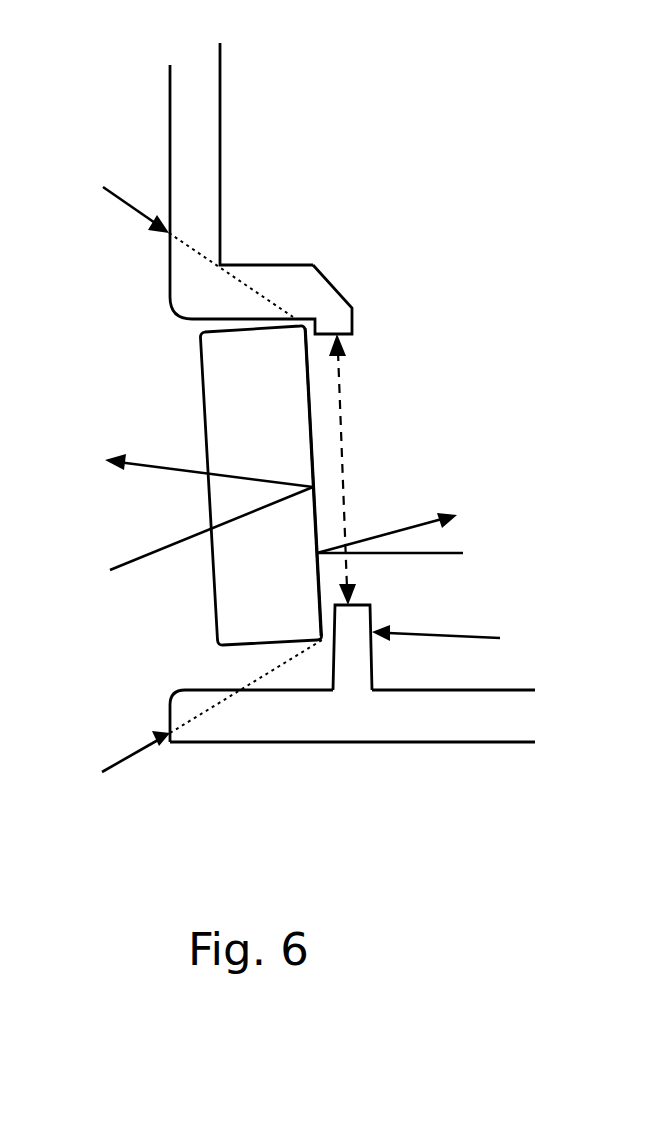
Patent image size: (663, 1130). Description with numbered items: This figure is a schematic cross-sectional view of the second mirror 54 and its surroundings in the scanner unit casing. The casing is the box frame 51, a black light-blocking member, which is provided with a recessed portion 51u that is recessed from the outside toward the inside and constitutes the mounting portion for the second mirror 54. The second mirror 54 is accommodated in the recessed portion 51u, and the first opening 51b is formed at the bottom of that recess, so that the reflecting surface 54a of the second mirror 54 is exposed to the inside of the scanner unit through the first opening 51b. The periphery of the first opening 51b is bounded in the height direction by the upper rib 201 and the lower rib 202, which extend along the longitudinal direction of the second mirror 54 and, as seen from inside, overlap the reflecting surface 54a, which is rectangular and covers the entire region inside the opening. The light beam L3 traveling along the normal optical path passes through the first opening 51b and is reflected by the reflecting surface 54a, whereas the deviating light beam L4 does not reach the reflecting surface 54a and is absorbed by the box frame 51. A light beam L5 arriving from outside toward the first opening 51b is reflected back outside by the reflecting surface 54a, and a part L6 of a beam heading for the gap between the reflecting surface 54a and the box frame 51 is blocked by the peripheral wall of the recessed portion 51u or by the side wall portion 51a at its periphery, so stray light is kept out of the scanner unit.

The box frame 51 is at (170, 100).
The side wall portion 51a is at (170, 195).
The first opening 51b is at (345, 497).
The recessed portion 51u is at (213, 688).
The upper rib 201 is at (345, 325).
The lower rib 202 is at (360, 615).
The second mirror 54 is at (208, 573).
The reflecting surface 54a is at (310, 427).
The light beam L3 is at (408, 527).
The light beam L4 is at (460, 639).
The light beam L5 is at (206, 488).
The part of a light beam L6 is at (211, 493).